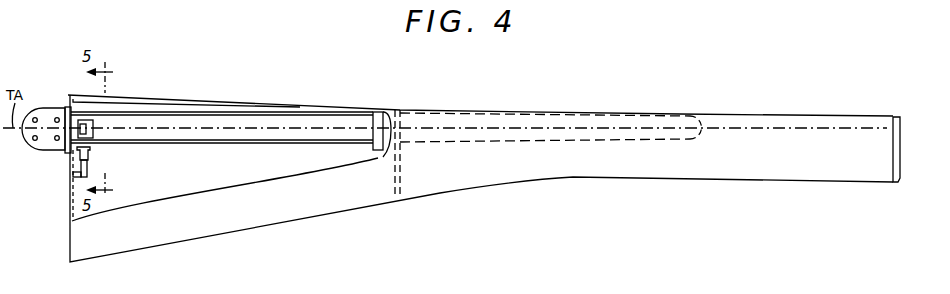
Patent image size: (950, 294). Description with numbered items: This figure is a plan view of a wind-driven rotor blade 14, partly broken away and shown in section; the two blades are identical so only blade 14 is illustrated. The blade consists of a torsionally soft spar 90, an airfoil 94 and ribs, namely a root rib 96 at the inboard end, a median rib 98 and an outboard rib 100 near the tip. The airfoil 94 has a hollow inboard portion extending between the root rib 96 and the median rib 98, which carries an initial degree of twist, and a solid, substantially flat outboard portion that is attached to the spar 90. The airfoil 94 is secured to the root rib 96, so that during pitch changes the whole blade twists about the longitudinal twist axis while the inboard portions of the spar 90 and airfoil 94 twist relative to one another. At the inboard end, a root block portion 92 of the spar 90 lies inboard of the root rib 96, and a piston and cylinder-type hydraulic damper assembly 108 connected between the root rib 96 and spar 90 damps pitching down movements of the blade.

The blade 14 is at (456, 98).
The torsionally soft spar 90 is at (318, 118).
The root block portion 92 is at (48, 118).
The airfoil 94 is at (266, 200).
The root rib 96 is at (70, 193).
The median rib 98 is at (400, 197).
The outboard rib 100 is at (893, 148).
The hydraulic damper assembly 108 is at (98, 162).